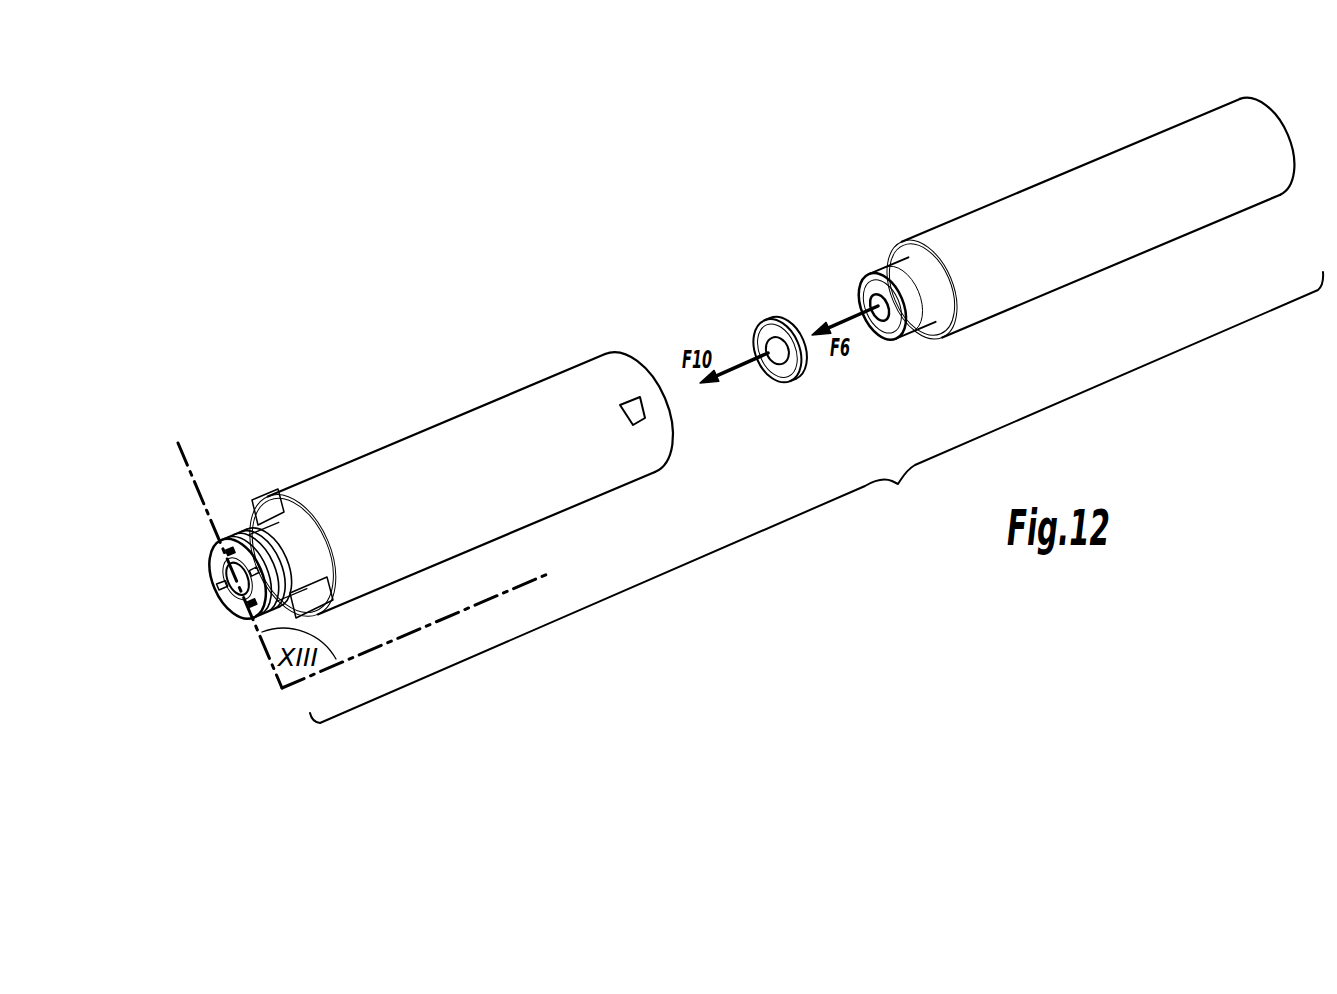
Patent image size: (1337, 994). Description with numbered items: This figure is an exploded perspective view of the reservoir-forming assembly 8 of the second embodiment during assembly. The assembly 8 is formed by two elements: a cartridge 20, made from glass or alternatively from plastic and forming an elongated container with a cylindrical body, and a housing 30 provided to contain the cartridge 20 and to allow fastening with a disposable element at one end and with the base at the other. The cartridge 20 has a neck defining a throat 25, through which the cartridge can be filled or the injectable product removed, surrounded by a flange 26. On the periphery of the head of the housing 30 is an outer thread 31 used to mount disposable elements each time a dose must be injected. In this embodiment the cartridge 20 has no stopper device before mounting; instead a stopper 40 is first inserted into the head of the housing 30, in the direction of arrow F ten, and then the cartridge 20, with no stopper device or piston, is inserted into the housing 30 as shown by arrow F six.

The reservoir-forming assembly 8 is at (816, 497).
The cartridge 20 is at (1048, 147).
The throat 25 is at (872, 298).
The flange 26 is at (913, 312).
The housing 30 is at (482, 377).
The outer thread 31 is at (223, 515).
The stopper 40 is at (782, 295).